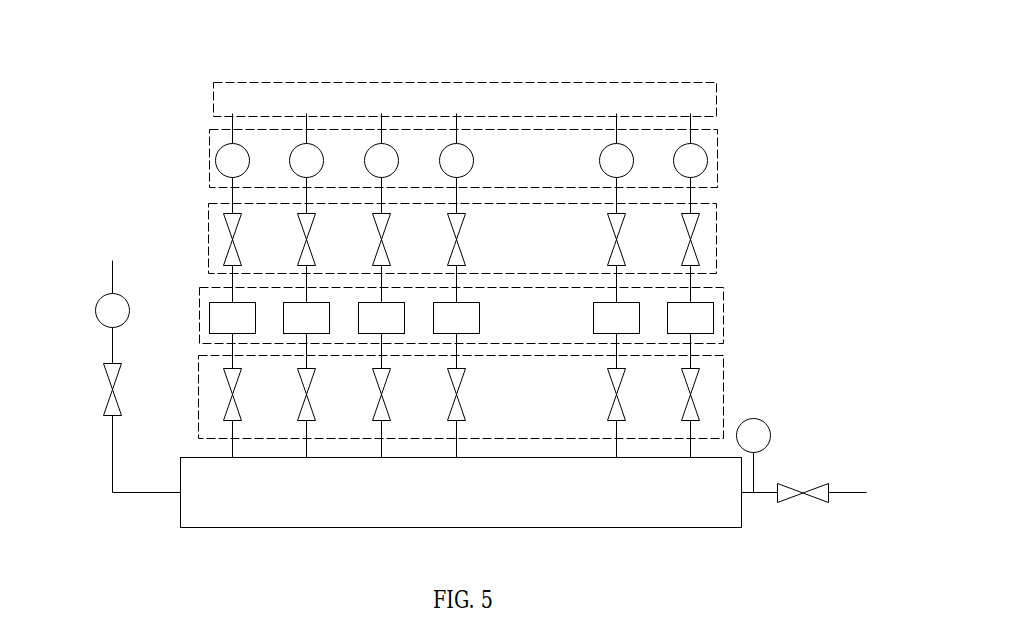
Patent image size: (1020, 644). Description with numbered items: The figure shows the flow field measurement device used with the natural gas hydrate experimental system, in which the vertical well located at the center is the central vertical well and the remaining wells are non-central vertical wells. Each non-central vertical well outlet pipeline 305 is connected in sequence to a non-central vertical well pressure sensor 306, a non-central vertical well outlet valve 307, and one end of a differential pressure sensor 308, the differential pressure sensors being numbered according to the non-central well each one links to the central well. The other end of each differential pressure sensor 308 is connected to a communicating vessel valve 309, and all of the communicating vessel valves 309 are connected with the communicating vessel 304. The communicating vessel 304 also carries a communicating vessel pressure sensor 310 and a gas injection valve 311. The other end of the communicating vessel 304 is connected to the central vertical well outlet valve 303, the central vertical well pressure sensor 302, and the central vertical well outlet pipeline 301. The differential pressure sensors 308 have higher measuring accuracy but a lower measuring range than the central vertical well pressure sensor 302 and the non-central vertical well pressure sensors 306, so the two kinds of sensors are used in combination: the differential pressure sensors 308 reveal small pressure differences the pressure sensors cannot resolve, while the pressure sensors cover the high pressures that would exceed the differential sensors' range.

The central vertical well outlet pipeline 301 is at (69, 236).
The central vertical well pressure sensor 302 is at (67, 308).
The central vertical well outlet valve 303 is at (93, 415).
The communicating vessel 304 is at (416, 507).
The non-central vertical well outlet pipeline 305 is at (518, 86).
The non-central vertical well pressure sensor 306 is at (524, 154).
The non-central vertical well outlet valve 307 is at (523, 237).
The differential pressure sensor 308 is at (524, 313).
The communicating vessel valve 309 is at (527, 395).
The communicating vessel pressure sensor 310 is at (806, 440).
The gas injection valve 311 is at (833, 465).